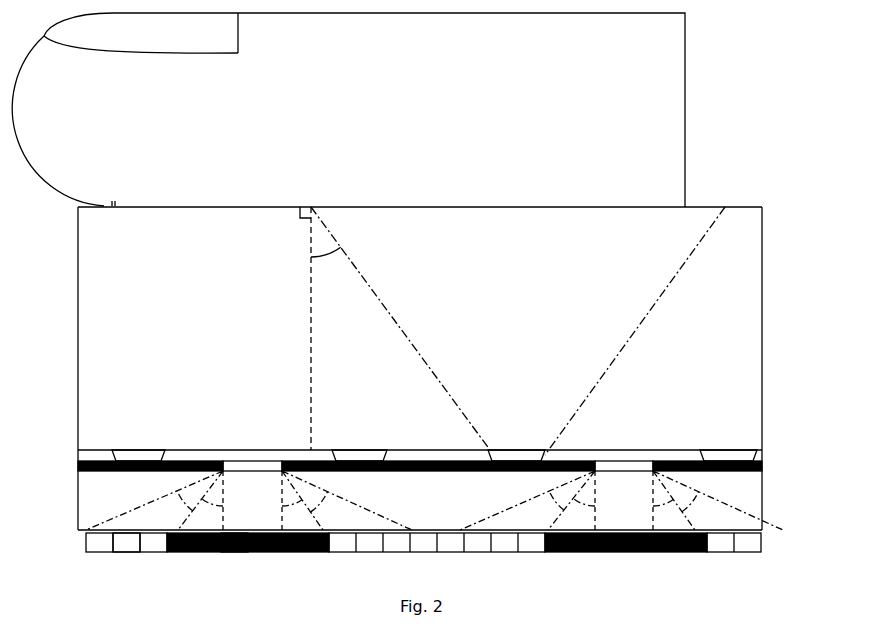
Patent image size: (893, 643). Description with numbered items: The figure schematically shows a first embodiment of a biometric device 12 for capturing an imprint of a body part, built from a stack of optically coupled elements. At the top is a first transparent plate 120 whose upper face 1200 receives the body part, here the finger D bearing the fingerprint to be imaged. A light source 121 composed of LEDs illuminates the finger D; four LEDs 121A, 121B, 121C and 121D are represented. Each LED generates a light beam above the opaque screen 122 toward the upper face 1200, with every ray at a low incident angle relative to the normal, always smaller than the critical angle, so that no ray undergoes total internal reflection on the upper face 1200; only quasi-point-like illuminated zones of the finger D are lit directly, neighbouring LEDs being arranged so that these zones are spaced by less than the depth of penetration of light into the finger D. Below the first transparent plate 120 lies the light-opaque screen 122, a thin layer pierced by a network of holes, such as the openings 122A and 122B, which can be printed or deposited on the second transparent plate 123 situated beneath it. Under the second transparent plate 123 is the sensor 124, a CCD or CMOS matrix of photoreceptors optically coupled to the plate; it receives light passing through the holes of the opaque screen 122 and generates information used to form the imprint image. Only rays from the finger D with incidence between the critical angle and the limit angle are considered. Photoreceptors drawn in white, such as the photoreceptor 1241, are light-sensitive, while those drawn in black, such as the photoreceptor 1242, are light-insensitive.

The finger D is at (686, 50).
The biometric device 12 is at (713, 177).
The upper face 1200 is at (744, 207).
The first transparent plate 120 is at (72, 210).
The light source 121 is at (70, 451).
The LED 121A is at (168, 456).
The LED 121B is at (390, 456).
The LED 121C is at (547, 457).
The LED 121D is at (758, 455).
The opaque screen 122 is at (70, 463).
The first opening of light shielding layer 122A is at (265, 447).
The second opening of light shielding layer 122B is at (612, 460).
The second transparent plate 123 is at (70, 475).
The sensor 124 is at (70, 536).
The photoreceptor 1241 is at (127, 554).
The photoreceptor 1242 is at (232, 554).